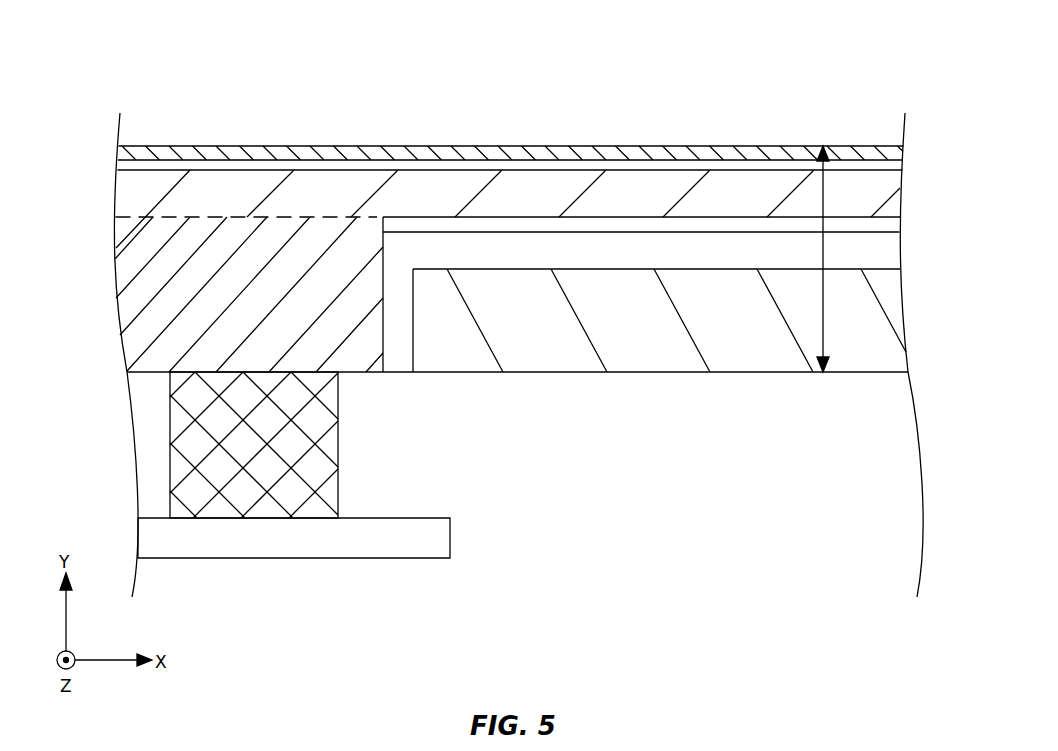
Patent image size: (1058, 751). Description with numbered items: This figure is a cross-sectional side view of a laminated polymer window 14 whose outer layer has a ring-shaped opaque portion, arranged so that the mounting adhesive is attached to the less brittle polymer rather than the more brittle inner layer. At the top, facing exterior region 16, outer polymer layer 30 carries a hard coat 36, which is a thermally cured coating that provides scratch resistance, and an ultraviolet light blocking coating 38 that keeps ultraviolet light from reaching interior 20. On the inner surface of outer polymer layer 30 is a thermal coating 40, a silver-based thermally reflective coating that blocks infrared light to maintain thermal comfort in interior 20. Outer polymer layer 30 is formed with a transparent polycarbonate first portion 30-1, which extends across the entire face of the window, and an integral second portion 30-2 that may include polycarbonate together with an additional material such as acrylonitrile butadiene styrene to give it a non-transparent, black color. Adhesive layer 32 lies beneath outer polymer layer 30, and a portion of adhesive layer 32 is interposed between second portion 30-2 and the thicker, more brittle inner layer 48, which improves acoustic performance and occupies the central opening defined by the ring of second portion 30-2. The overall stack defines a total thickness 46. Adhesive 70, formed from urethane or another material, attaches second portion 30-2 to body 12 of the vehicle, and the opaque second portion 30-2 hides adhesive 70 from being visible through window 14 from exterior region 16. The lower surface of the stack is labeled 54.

The window 14 is at (203, 76).
The exterior region 16 is at (804, 121).
The interior 20 is at (870, 458).
The hard coat 36 is at (893, 148).
The ultraviolet light blocking coating 38 is at (893, 167).
The outer polymer layer 30 is at (893, 203).
The first portion 30-1 is at (118, 193).
The second portion 30-2 is at (128, 312).
The thermal coating 40 is at (893, 226).
The adhesive layer 32 is at (893, 251).
The inner layer 48 is at (898, 300).
The total thickness 46 is at (821, 247).
The lower surface 54 is at (575, 374).
The adhesive 70 is at (338, 452).
The body 12 is at (273, 548).